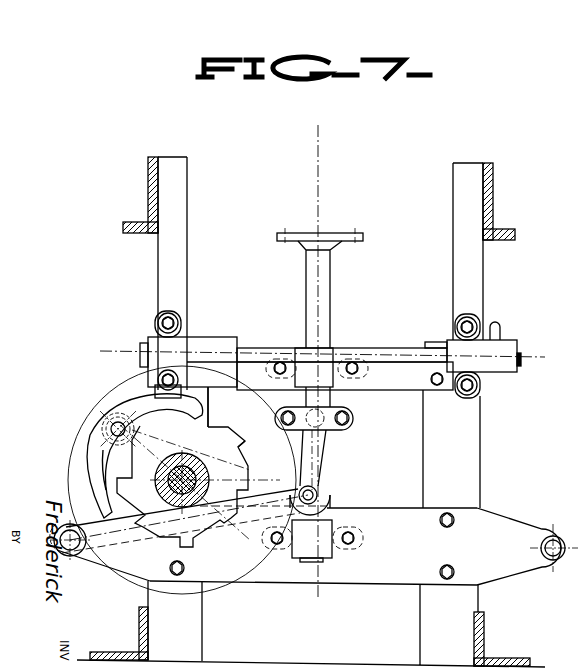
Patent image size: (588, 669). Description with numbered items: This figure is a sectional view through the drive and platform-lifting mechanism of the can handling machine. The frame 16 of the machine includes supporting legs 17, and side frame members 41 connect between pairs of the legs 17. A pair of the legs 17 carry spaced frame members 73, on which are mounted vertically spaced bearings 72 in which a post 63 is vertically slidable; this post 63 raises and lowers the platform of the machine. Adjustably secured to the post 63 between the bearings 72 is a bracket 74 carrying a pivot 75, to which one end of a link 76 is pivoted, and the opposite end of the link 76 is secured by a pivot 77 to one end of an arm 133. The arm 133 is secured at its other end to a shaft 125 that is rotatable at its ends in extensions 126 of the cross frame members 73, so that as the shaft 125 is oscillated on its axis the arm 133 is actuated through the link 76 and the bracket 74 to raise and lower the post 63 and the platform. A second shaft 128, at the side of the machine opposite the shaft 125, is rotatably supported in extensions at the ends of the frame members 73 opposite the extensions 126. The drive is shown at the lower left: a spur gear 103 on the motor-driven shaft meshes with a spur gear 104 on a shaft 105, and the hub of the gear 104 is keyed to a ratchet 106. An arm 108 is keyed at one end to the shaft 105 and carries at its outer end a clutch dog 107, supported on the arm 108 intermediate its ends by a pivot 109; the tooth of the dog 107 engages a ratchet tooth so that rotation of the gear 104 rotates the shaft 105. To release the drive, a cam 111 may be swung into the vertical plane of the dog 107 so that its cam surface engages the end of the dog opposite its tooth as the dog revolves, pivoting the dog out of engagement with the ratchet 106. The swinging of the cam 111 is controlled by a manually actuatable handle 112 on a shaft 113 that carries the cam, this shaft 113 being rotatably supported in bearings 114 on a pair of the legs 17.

The frame 16 is at (148, 168).
The supporting legs 17 is at (183, 170).
The side frame members 41 is at (125, 652).
The post 63 is at (322, 265).
The bearings 72 is at (334, 350).
The frame members 73 is at (386, 372).
The bracket 74 is at (353, 420).
The pivot 75 is at (347, 406).
The link 76 is at (318, 458).
The pivot 77 is at (320, 487).
The spur gear 103 is at (328, 500).
The spur gear 104 is at (110, 395).
The shaft 105 is at (247, 467).
The ratchet 106 is at (236, 446).
The clutch dog 107 is at (140, 403).
The arm 108 is at (105, 458).
The pivot 109 is at (108, 428).
The cam 111 is at (218, 340).
The handle 112 is at (500, 325).
The shaft 113 is at (257, 347).
The bearings 114 is at (150, 343).
The shaft 125 is at (63, 531).
The extensions 126 is at (84, 560).
The second shaft 128 is at (541, 550).
The arm 133 is at (117, 547).